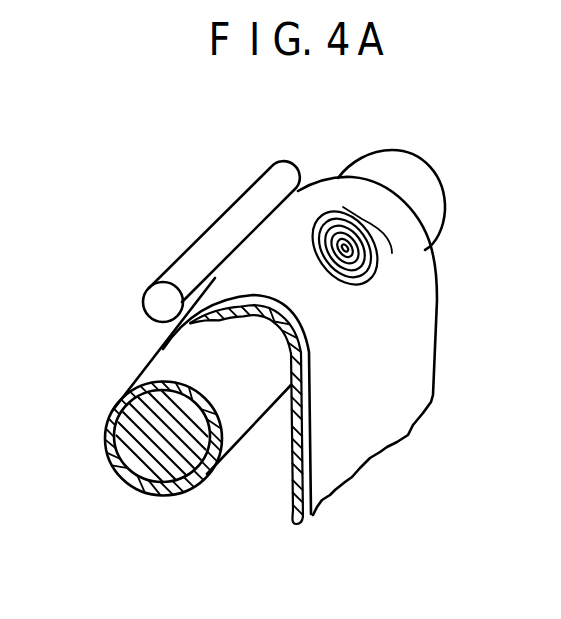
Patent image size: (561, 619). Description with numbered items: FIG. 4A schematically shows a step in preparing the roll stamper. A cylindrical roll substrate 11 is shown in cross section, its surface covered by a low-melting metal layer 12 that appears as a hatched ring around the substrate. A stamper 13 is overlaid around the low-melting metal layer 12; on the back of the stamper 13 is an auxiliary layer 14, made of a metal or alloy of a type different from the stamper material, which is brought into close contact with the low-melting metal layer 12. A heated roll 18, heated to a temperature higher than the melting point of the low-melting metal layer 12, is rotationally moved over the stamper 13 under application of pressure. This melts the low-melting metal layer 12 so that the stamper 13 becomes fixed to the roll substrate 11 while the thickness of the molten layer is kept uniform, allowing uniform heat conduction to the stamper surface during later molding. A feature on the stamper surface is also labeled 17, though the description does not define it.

The roll substrate 11 is at (133, 447).
The low-melting metal layer 12 is at (143, 485).
The stamper 13 is at (428, 375).
The auxiliary layer 14 is at (293, 521).
The spiral groove 17 is at (376, 227).
The heated roll 18 is at (282, 174).